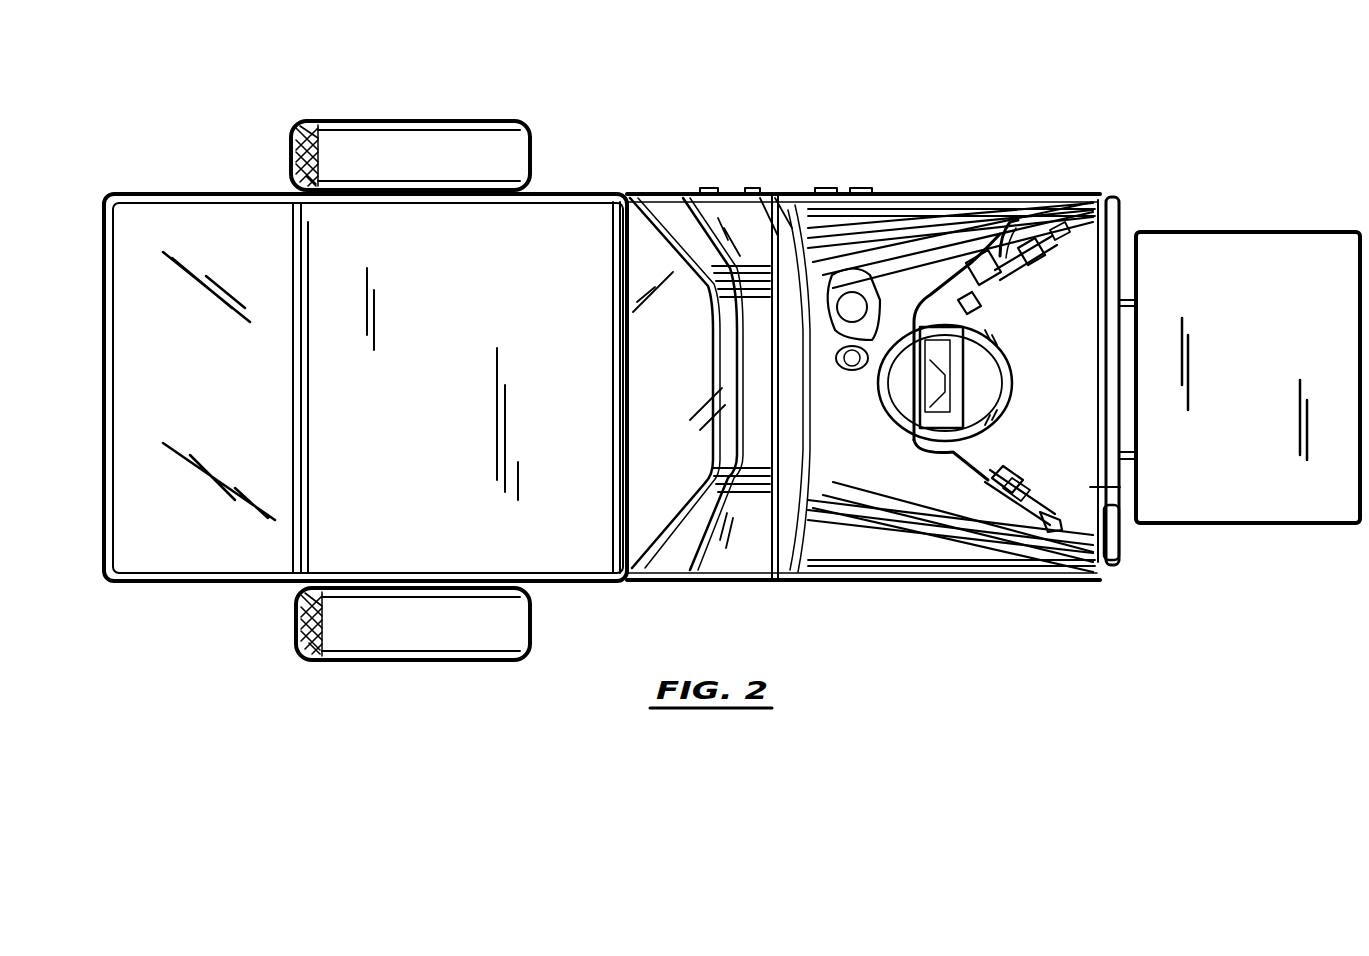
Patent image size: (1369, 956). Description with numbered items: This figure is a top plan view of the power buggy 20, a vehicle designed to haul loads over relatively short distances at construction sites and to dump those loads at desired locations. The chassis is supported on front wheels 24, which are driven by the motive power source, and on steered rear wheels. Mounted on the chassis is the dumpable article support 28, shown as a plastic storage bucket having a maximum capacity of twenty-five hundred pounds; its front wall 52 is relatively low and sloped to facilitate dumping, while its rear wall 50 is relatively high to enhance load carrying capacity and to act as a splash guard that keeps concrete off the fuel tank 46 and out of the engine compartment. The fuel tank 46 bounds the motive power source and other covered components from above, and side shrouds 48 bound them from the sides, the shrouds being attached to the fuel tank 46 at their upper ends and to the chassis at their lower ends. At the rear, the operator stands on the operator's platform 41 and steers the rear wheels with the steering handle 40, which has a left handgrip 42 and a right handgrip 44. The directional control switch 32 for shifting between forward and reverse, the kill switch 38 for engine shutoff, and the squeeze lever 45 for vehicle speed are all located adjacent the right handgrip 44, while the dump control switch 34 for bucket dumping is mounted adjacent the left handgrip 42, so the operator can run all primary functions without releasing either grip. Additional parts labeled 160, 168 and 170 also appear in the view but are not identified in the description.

The power buggy 20 is at (766, 112).
The front wheels 24 is at (470, 121).
The dumpable article support 28 is at (580, 190).
The directional control switch 32 is at (1000, 285).
The dump control switch 34 is at (1015, 480).
The kill switch 38 is at (985, 298).
The steering handle 40 is at (946, 280).
The operator's platform 41 is at (1288, 242).
The left handgrip 42 is at (1035, 525).
The right handgrip 44 is at (1022, 240).
The squeeze lever 45 is at (995, 225).
The fuel tank 46 is at (1122, 212).
The side shrouds 48 is at (888, 195).
The rear wall 50 is at (795, 196).
The front wall 52 is at (258, 518).
The connector 160 is at (1092, 487).
The frame 168 is at (1085, 205).
The hook 170 is at (1100, 562).